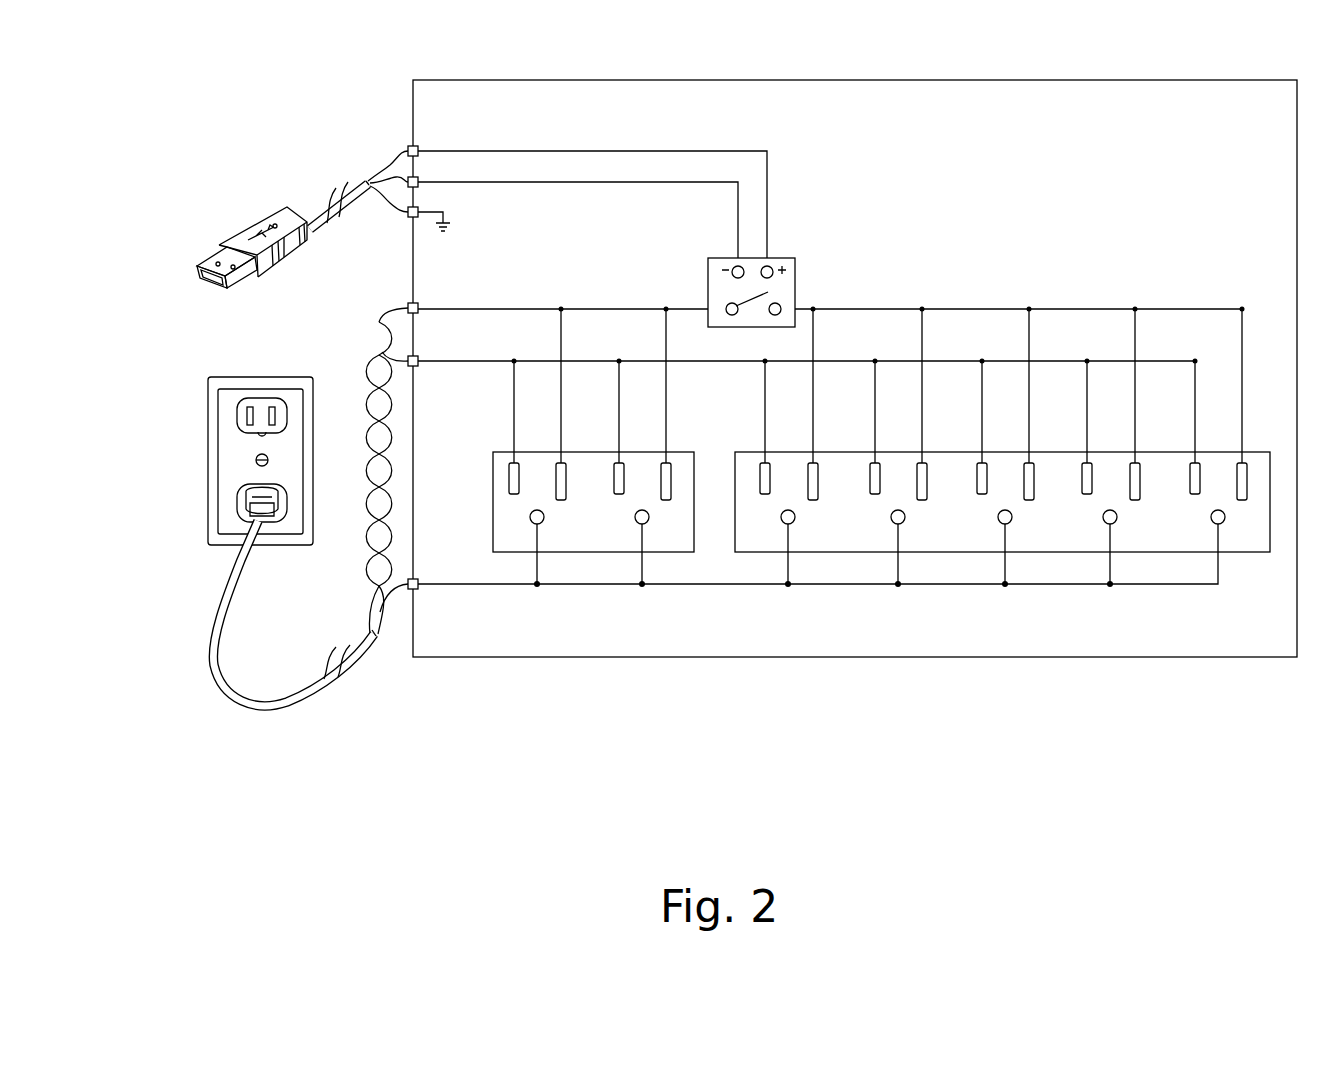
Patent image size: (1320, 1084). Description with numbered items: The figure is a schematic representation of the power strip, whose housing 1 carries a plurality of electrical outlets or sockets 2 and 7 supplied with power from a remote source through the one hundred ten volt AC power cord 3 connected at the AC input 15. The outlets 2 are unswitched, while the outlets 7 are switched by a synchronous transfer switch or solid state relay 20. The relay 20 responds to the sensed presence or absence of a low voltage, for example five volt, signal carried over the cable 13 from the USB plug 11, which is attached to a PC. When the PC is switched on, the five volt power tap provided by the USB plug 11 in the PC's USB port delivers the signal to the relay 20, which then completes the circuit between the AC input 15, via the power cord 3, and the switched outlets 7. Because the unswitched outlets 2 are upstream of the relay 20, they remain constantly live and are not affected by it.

The housing 1 is at (968, 657).
The unswitched outlets 2 is at (590, 536).
The switched outlets 7 is at (1163, 537).
The synchronous transfer switch or solid state relay 20 is at (782, 258).
The cable 13 is at (313, 207).
The USB plug 11 is at (272, 272).
The AC input 15 is at (223, 523).
The 110V AC power cord 3 is at (312, 690).